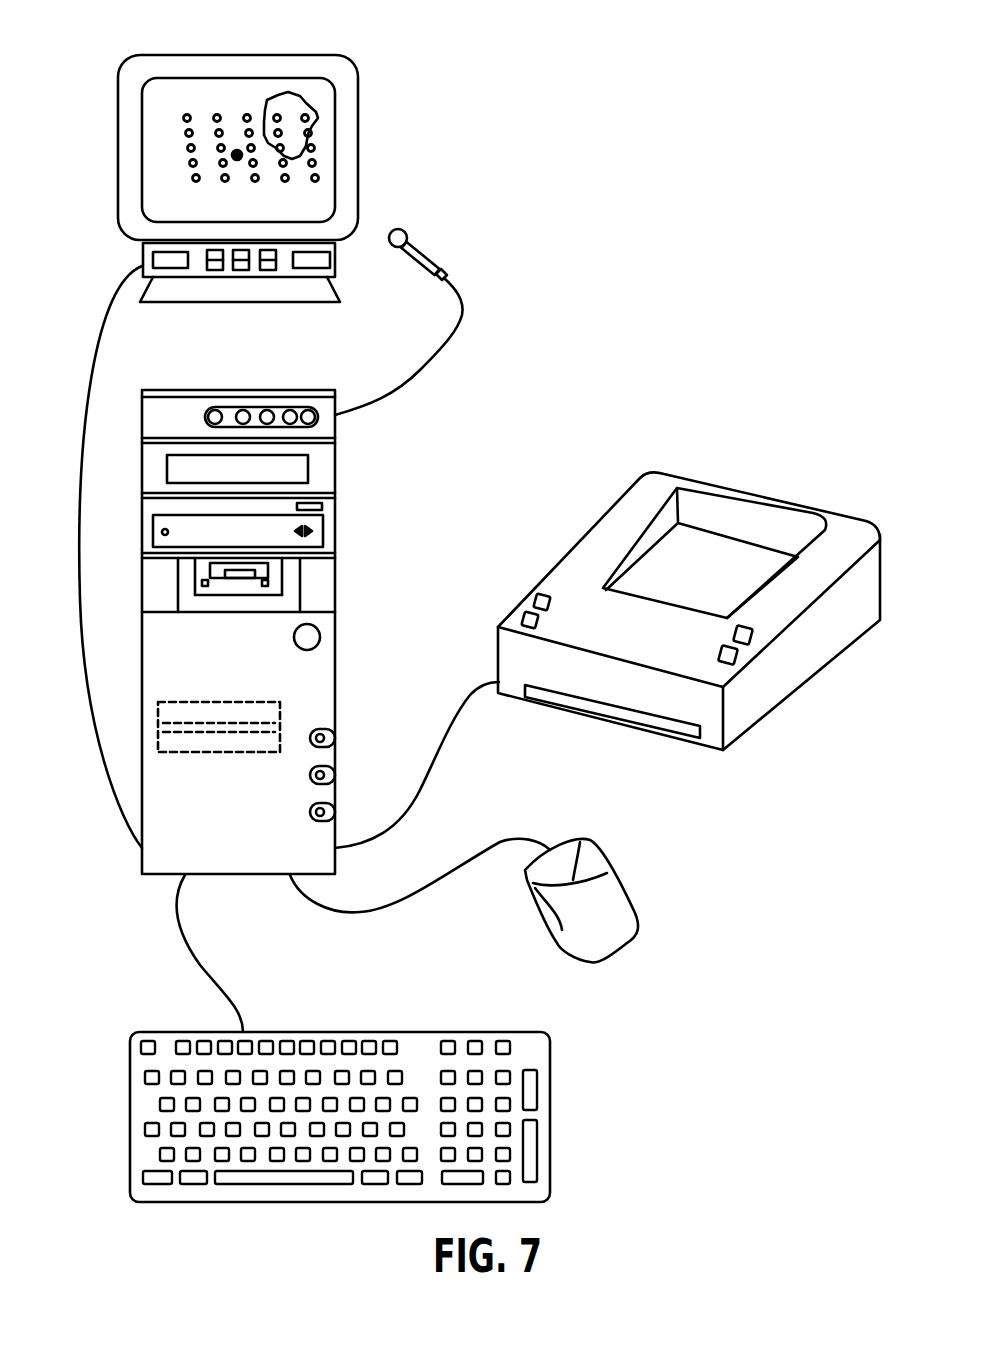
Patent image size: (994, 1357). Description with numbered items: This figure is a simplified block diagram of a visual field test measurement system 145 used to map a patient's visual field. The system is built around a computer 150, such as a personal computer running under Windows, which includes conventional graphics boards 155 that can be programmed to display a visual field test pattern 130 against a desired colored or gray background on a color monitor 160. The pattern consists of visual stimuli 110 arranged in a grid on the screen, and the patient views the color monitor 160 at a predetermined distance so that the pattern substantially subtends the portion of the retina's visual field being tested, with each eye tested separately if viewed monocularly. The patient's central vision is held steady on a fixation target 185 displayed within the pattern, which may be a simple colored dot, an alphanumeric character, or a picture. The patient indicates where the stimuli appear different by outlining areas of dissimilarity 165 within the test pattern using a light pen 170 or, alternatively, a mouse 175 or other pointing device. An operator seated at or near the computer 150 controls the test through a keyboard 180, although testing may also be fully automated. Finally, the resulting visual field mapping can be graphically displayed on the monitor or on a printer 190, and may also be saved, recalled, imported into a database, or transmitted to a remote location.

The visual stimuli 110 is at (172, 87).
The visual field test pattern 130 is at (251, 96).
The visual field test measurement system 145 is at (677, 175).
The computer 150 is at (336, 625).
The graphics boards 155 is at (205, 701).
The color monitor 160 is at (358, 132).
The areas of dissimilarity 165 is at (288, 92).
The light pen 170 is at (412, 266).
The mouse 175 is at (637, 918).
The keyboard 180 is at (552, 1115).
The fixation target 185 is at (233, 157).
The printer 190 is at (762, 492).